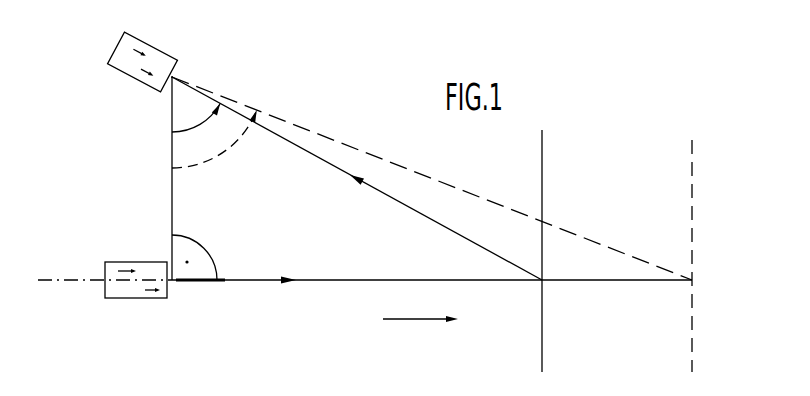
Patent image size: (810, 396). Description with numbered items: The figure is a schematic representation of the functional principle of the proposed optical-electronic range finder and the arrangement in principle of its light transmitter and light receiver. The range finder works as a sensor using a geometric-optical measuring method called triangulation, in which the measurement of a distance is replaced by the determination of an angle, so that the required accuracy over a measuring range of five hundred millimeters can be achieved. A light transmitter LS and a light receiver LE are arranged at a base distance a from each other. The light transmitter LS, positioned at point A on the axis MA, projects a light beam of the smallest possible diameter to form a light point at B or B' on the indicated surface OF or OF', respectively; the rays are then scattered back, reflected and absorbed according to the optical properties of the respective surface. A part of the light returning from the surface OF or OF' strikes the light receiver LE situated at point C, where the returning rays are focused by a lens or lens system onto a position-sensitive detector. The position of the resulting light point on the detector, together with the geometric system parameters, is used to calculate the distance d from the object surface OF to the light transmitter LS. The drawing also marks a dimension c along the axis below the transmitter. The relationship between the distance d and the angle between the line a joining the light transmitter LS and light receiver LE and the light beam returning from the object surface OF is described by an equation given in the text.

The light receiver LE is at (143, 60).
The light transmitter LS is at (140, 290).
The measuring axis MA is at (50, 280).
The object surface OF is at (513, 262).
The object surface at alternative position OF' is at (661, 267).
The light transmitter position A is at (193, 275).
The light point on surface OF B is at (364, 194).
The light point on surface OF' B' is at (441, 194).
The light receiver position C is at (184, 68).
The base distance a is at (157, 178).
The distance to the object surface d is at (415, 319).
The distance c is at (254, 388).